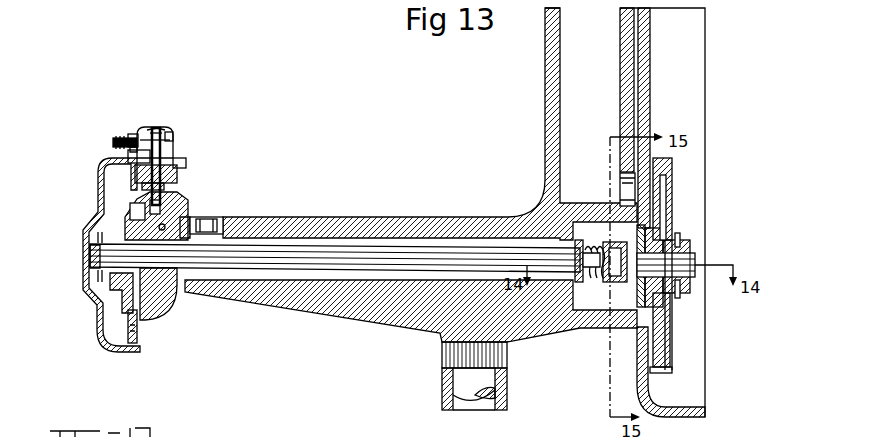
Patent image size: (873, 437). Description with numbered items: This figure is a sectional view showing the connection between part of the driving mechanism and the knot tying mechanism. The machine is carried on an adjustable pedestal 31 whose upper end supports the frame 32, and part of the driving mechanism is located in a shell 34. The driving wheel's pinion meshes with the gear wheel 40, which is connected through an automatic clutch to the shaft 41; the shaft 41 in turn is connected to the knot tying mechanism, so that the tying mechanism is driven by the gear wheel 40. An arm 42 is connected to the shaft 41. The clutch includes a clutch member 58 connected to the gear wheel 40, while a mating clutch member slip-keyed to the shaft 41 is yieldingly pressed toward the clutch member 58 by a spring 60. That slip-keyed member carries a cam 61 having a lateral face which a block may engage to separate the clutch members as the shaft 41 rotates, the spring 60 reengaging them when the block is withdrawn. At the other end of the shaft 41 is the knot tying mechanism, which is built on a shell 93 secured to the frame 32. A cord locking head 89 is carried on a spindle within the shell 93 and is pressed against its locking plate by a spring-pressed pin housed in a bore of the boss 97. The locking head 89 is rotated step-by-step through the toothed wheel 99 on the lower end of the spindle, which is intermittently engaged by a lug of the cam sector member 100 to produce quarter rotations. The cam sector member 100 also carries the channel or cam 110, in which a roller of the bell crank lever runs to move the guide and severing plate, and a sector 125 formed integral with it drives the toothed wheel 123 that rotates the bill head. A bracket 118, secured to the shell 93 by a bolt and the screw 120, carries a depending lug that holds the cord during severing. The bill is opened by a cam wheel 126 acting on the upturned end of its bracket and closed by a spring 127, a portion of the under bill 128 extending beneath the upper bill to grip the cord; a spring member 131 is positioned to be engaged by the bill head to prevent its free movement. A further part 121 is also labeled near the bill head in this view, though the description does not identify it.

The adjustable pedestal 31 is at (500, 393).
The frame 32 is at (555, 120).
The shell 34 is at (695, 65).
The gear wheel 40 is at (665, 348).
The shaft 41 is at (88, 262).
The arm 42 is at (690, 247).
The clutch member 58 is at (640, 295).
The spring 60 is at (593, 283).
The cam 61 is at (618, 240).
The cord locking head 89 is at (175, 143).
The shell 93 is at (200, 212).
The boss 97 is at (186, 163).
The toothed wheel 99 is at (170, 205).
The cam sector member 100 is at (120, 302).
The channel or cam 110 is at (108, 215).
The bracket 118 is at (138, 128).
The screw 120 is at (127, 152).
The washer 121 is at (158, 127).
The toothed wheel 123 is at (177, 177).
The sector 125 is at (138, 333).
The cam wheel 126 is at (132, 132).
The spring 127 is at (153, 127).
The under bill 128 is at (167, 128).
The spring member 131 is at (127, 138).